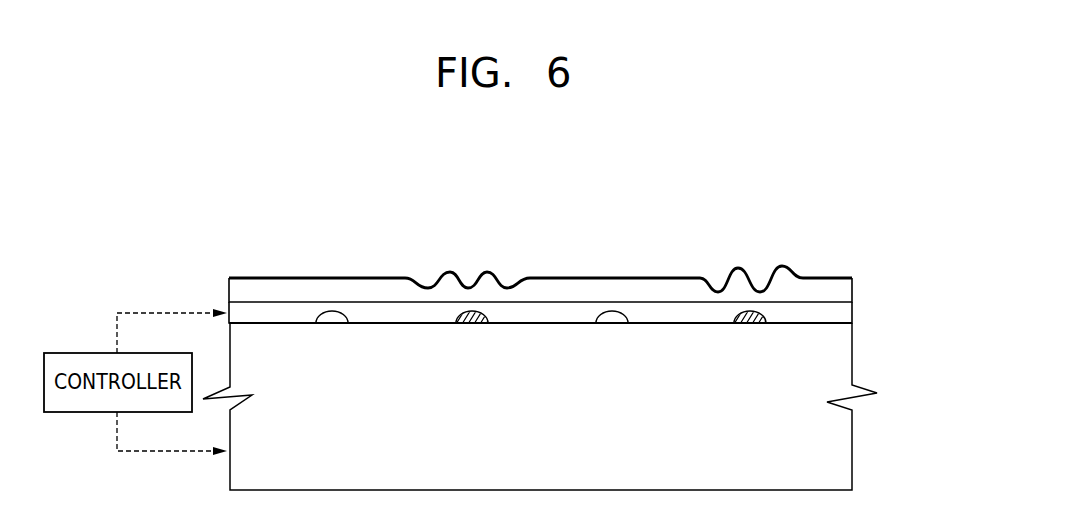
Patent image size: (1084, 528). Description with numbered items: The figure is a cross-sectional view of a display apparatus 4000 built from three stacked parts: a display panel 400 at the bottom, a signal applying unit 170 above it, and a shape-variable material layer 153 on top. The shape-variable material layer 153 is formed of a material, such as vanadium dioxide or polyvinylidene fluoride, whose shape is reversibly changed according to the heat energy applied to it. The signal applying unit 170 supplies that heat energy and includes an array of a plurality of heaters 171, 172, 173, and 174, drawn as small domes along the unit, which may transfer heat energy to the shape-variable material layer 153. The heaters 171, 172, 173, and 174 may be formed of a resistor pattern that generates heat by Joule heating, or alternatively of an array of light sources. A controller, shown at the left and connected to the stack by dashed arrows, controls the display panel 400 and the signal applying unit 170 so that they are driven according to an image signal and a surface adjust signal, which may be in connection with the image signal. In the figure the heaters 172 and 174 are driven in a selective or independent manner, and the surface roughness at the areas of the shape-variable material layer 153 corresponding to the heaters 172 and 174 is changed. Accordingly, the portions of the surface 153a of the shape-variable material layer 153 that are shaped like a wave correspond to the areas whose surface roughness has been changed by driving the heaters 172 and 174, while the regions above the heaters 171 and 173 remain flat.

The display apparatus 4000 is at (852, 241).
The display panel 400 is at (837, 448).
The signal applying unit 170 is at (866, 313).
The heater 171 is at (332, 323).
The heater 172 is at (472, 323).
The heater 173 is at (612, 323).
The heater 174 is at (750, 323).
The shape-variable material layer 153 is at (837, 287).
The surface of the shape-variable material layer 153a is at (655, 277).